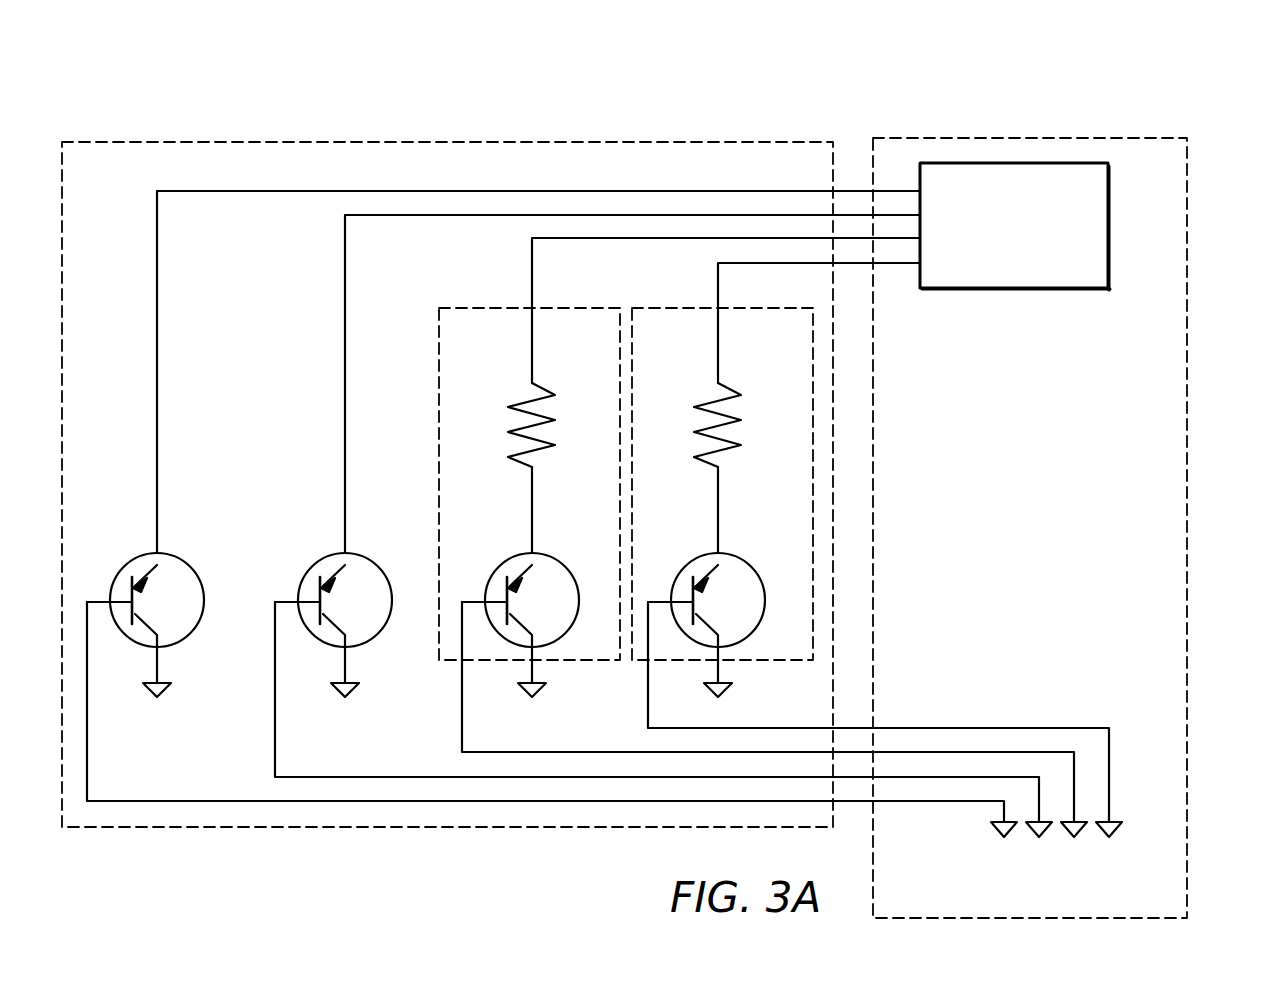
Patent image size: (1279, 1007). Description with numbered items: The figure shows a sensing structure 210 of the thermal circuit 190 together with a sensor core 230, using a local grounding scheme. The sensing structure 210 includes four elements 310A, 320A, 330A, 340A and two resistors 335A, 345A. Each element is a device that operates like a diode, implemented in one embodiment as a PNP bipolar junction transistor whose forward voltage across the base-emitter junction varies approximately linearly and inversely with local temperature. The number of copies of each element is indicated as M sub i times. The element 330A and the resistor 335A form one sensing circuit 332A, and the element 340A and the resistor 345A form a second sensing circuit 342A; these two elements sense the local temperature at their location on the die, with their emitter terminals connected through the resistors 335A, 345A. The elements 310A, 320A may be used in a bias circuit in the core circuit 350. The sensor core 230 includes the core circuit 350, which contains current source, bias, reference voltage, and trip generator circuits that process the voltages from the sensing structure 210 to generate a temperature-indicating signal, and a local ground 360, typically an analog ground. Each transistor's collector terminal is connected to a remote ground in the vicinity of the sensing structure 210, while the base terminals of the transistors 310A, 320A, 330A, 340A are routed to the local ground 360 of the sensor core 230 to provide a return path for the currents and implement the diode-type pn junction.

The thermal circuit 190 is at (1181, 66).
The sensing structure 210 is at (803, 147).
The sensor core 230 is at (1166, 147).
The core circuit 350 is at (1094, 178).
The local ground 360 is at (1056, 860).
The element 310A is at (140, 566).
The element 320A is at (328, 566).
The element 330A is at (548, 562).
The element 340A is at (735, 562).
The sensing circuit 332A is at (523, 457).
The sensing circuit 342A is at (721, 457).
The resistor 335A is at (532, 370).
The resistor 345A is at (718, 367).